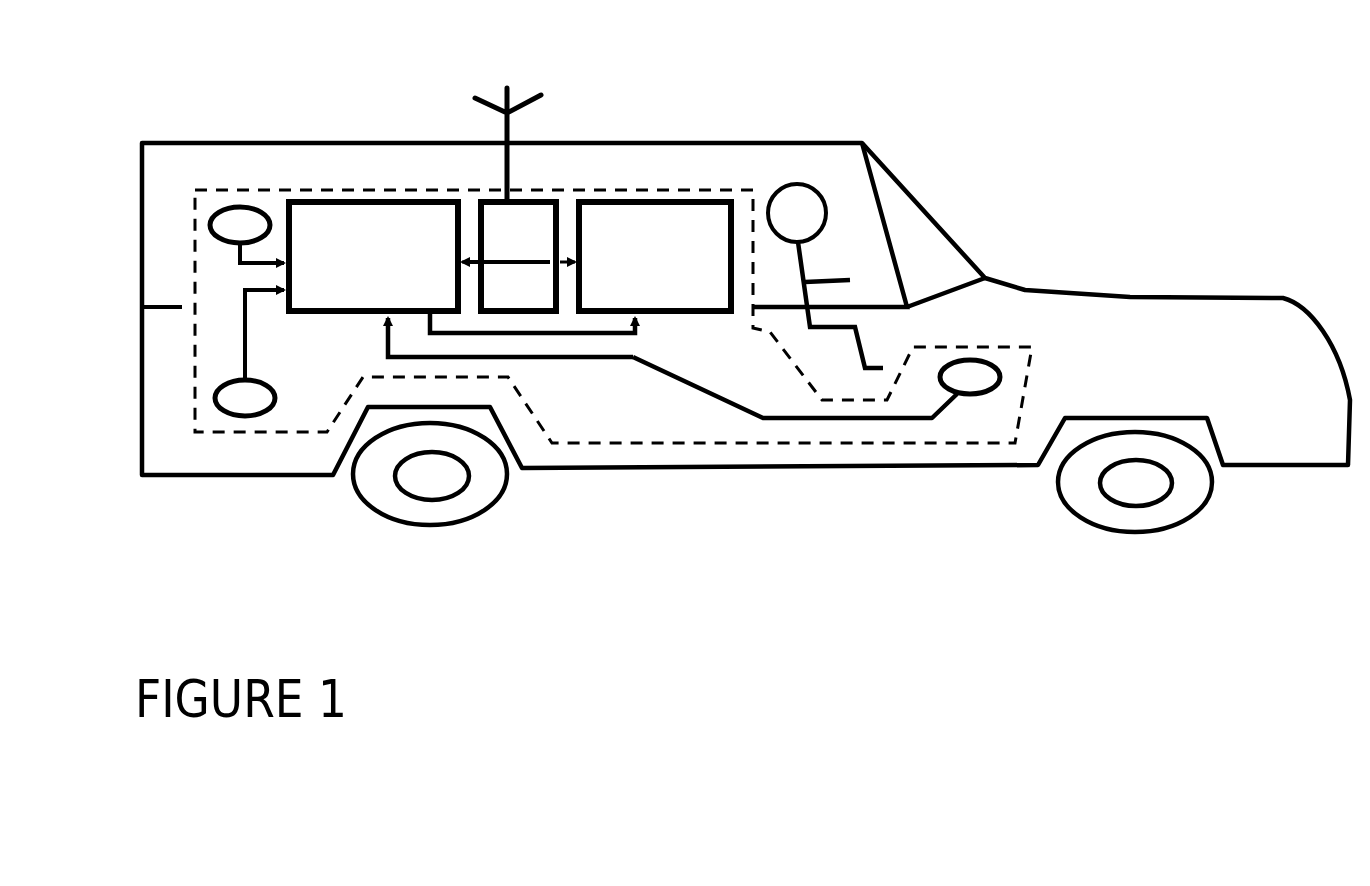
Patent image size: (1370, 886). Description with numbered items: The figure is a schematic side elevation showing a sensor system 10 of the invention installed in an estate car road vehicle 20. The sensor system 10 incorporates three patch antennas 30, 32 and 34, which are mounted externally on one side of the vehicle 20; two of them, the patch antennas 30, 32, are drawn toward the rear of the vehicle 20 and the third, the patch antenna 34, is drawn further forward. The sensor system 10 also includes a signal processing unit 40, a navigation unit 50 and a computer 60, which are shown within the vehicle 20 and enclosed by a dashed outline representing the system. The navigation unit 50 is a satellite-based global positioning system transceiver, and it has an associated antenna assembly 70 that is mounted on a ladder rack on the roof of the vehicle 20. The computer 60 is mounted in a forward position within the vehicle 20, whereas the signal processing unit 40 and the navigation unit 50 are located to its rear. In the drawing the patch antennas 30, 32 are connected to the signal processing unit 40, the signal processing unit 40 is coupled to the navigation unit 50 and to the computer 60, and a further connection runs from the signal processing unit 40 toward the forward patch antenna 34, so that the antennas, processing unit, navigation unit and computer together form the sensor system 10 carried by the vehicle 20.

The sensor system 10 is at (310, 184).
The road vehicle 20 is at (1145, 284).
The patch antenna 30 is at (247, 398).
The patch antenna 32 is at (232, 224).
The patch antenna 34 is at (970, 378).
The signal processing unit 40 is at (410, 230).
The navigation unit 50 is at (520, 222).
The computer 60 is at (668, 230).
The antenna assembly 70 is at (477, 98).